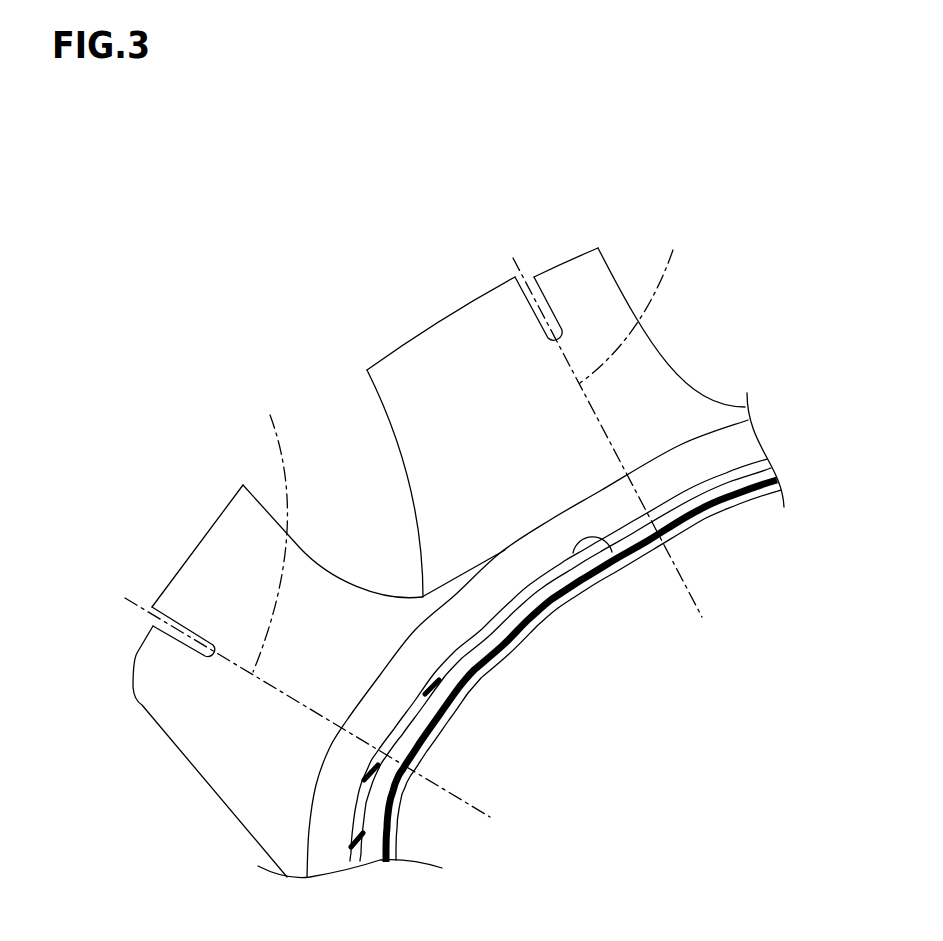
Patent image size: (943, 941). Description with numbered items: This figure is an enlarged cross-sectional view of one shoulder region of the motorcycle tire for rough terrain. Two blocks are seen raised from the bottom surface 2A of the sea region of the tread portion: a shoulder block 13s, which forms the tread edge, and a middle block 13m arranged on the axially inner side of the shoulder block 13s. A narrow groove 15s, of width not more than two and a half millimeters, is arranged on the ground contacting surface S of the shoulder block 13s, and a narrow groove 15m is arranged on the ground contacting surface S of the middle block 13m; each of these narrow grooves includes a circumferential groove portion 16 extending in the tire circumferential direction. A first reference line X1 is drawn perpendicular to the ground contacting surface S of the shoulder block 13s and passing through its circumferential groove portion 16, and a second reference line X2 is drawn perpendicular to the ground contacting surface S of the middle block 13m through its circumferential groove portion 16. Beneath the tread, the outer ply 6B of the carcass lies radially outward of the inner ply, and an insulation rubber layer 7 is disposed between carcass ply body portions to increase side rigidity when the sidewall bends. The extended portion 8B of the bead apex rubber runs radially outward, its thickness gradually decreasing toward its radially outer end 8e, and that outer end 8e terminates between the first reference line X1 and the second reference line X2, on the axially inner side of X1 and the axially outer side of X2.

The middle block 13m is at (420, 330).
The shoulder block 13s is at (228, 533).
The circumferential groove portion 16 is at (381, 481).
The narrow groove 15m is at (531, 258).
The narrow groove 15s is at (143, 597).
The ground contacting surface S is at (473, 297).
The first reference line X1 is at (272, 533).
The second reference line X2 is at (635, 302).
The bottom surface 2A is at (593, 490).
The radially outer end 8e is at (470, 631).
The outer ply 6B is at (607, 537).
The insulation rubber layer 7 is at (540, 617).
The extended portion 8B is at (373, 806).